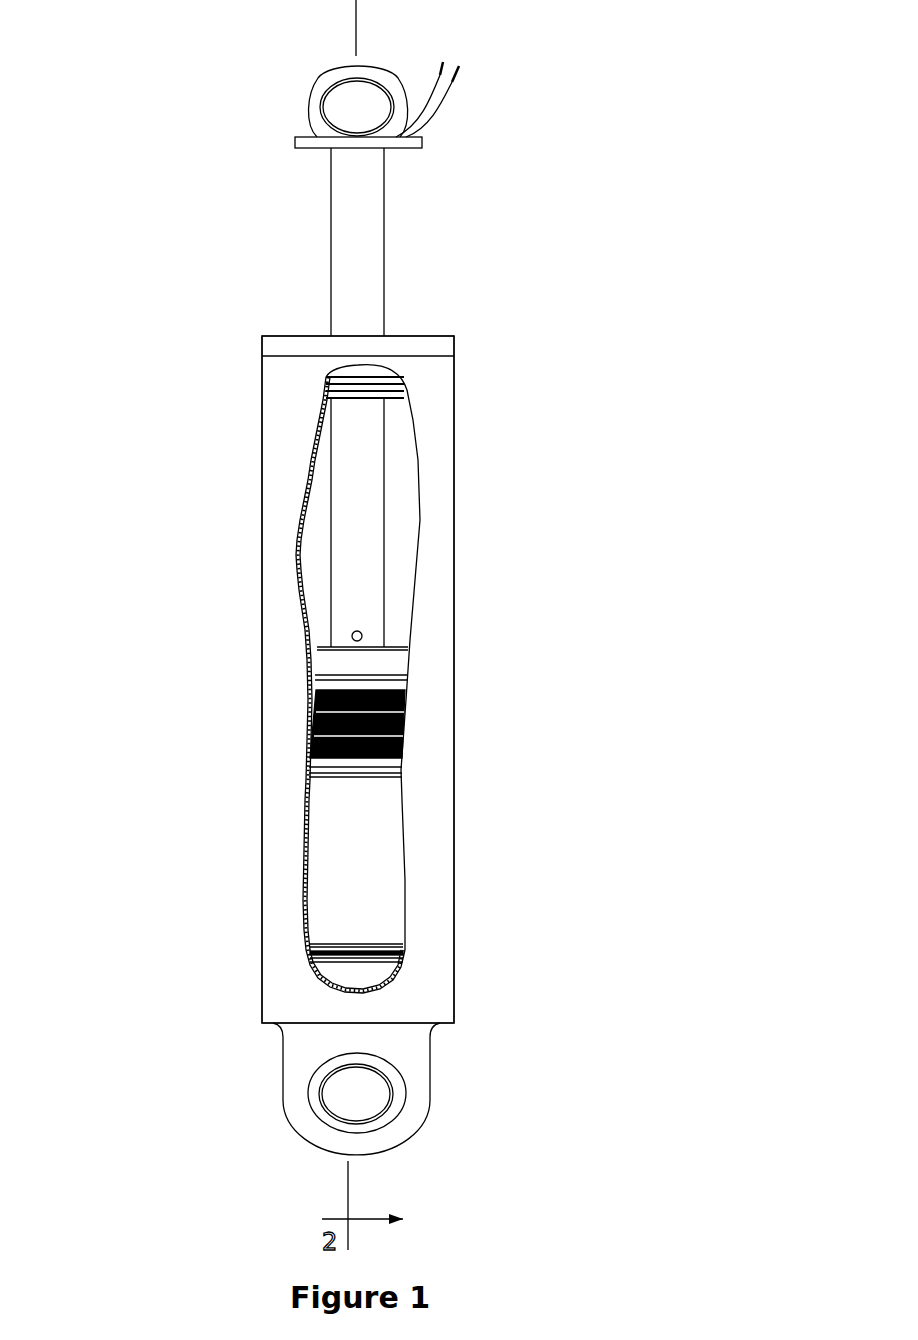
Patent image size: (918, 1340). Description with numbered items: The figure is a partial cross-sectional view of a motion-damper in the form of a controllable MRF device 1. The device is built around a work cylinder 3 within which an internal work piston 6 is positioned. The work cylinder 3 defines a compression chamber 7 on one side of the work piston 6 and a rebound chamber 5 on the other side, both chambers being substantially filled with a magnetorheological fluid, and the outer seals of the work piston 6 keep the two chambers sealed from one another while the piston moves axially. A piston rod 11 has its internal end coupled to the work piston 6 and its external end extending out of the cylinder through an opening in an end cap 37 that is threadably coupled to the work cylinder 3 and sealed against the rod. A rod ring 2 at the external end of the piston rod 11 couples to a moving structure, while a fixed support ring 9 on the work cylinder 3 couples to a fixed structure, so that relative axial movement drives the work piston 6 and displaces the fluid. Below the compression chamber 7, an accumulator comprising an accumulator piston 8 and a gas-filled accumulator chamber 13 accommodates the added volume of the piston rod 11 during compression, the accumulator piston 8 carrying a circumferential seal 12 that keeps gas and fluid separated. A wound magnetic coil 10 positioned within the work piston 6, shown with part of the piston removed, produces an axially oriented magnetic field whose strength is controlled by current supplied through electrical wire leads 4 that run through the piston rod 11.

The controllable MRF device 1 is at (482, 183).
The rod ring 2 is at (345, 80).
The work cylinder 3 is at (455, 393).
The electrical wire leads 4 is at (468, 77).
The rebound chamber 5 is at (318, 570).
The work piston 6 is at (400, 662).
The compression chamber 7 is at (335, 817).
The accumulator piston 8 is at (342, 940).
The fixed support ring 9 is at (403, 1082).
The wound magnetic coil 10 is at (323, 706).
The piston rod 11 is at (370, 600).
The circumferential seal 12 is at (393, 950).
The accumulator chamber 13 is at (365, 975).
The end cap 37 is at (368, 378).